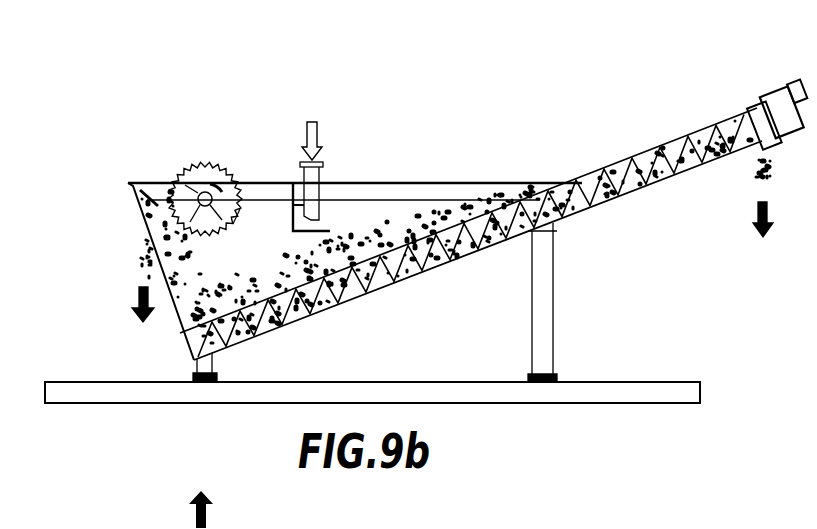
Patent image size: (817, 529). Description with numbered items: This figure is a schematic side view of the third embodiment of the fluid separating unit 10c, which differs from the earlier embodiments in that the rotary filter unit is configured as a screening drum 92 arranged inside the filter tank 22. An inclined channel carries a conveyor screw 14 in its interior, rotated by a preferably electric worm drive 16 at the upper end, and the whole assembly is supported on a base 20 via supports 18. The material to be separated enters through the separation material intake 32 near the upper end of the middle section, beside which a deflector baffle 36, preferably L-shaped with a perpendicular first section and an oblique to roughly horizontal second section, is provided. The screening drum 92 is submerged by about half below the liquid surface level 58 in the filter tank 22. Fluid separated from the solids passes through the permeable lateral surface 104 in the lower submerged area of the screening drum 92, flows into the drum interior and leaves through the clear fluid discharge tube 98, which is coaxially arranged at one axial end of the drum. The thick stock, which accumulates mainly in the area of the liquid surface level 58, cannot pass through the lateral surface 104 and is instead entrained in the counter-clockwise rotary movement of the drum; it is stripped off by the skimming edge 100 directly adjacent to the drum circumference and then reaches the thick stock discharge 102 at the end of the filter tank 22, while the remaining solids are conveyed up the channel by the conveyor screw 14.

The fluid separating unit 10c is at (392, 160).
The conveyor screw 14 is at (605, 203).
The worm drive 16 is at (773, 92).
The supports 18 is at (555, 317).
The base 20 is at (672, 381).
The filter tank 22 is at (438, 217).
The separation material intake 32 is at (323, 170).
The deflector baffle 36 is at (293, 183).
The liquid surface level 58 is at (483, 198).
The screening drum 92 is at (180, 173).
The clear fluid discharge tube 98 is at (207, 239).
The skimming edge 100 is at (130, 188).
The thick stock discharge 102 is at (147, 203).
The permeable lateral surface 104 is at (233, 226).